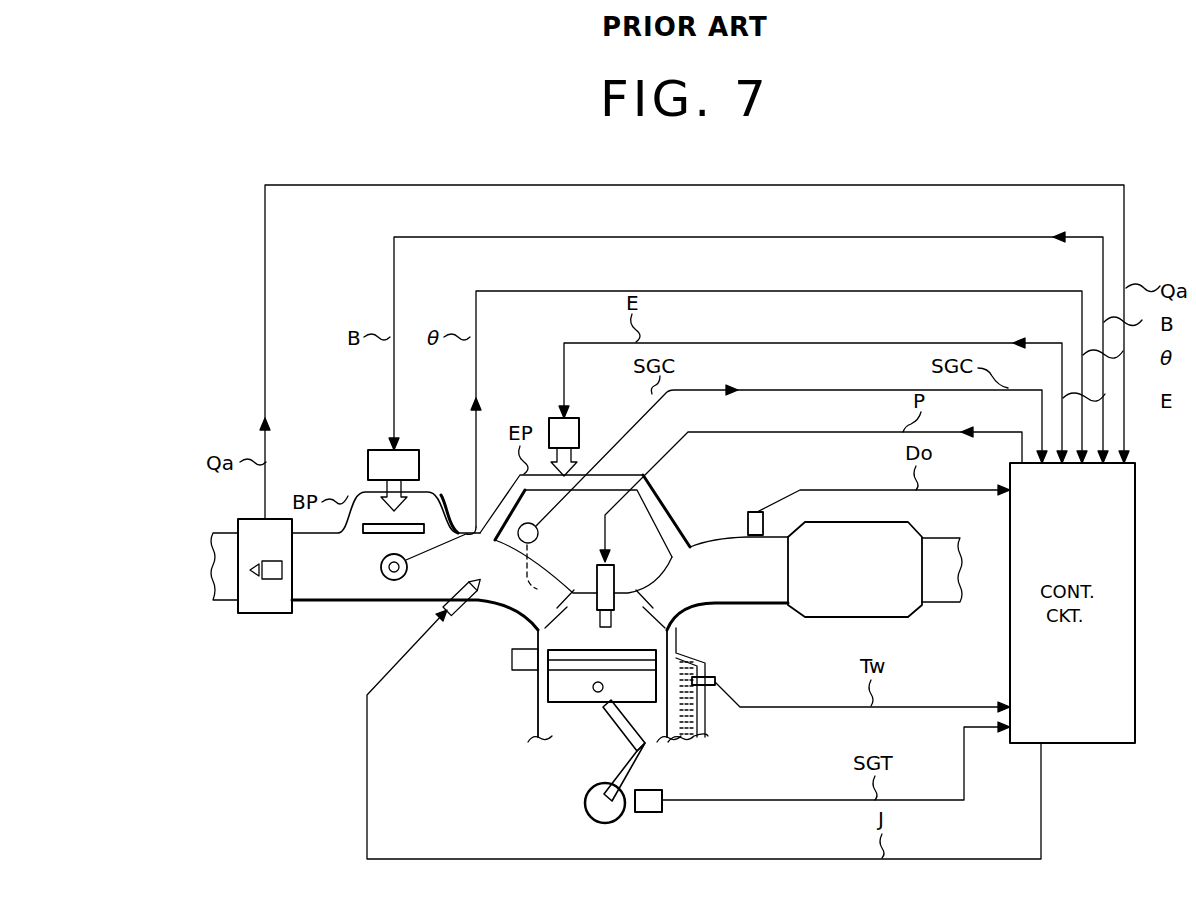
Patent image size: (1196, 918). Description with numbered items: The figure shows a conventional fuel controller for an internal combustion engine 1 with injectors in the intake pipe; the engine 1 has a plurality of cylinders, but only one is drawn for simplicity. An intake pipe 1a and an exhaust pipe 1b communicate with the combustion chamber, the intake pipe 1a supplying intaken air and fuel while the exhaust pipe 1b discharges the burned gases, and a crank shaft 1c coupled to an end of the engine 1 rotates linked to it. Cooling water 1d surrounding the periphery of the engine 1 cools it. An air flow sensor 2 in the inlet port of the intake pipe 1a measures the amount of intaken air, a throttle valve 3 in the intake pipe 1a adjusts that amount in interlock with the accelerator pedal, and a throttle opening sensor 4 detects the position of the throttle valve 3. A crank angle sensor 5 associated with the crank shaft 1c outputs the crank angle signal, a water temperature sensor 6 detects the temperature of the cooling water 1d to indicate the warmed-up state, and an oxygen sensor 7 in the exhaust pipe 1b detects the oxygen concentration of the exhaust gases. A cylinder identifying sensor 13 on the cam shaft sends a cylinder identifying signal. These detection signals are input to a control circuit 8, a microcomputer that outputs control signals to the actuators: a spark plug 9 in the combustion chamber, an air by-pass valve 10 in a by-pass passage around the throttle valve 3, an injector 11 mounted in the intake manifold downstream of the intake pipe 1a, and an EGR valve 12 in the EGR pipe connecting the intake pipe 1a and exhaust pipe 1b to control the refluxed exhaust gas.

The internal combustion engine 1 is at (704, 722).
The intake pipe 1a is at (382, 602).
The exhaust pipe 1b is at (750, 606).
The crank shaft 1c is at (585, 803).
The cooling water 1d is at (690, 742).
The air flow sensor 2 is at (262, 618).
The throttle valve 3 is at (383, 575).
The throttle opening sensor 4 is at (407, 568).
The crank angle sensor 5 is at (650, 814).
The water temperature sensor 6 is at (718, 681).
The oxygen sensor 7 is at (744, 524).
The control circuit 8 is at (1085, 745).
The spark plug 9 is at (617, 574).
The air by-pass valve 10 is at (422, 462).
The injector 11 is at (462, 620).
The EGR valve 12 is at (582, 430).
The cylinder identifying sensor 13 is at (540, 534).